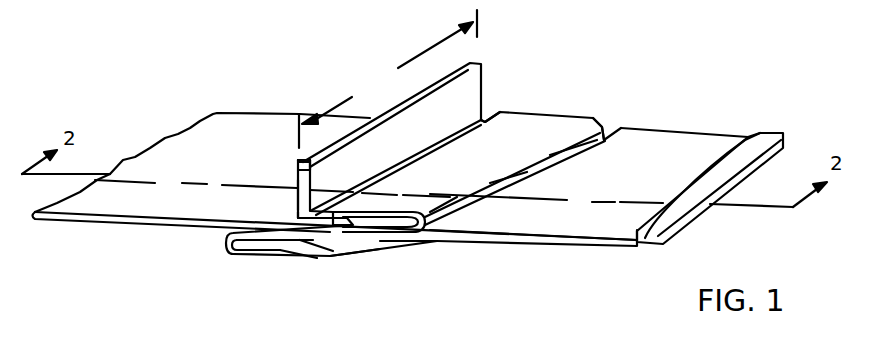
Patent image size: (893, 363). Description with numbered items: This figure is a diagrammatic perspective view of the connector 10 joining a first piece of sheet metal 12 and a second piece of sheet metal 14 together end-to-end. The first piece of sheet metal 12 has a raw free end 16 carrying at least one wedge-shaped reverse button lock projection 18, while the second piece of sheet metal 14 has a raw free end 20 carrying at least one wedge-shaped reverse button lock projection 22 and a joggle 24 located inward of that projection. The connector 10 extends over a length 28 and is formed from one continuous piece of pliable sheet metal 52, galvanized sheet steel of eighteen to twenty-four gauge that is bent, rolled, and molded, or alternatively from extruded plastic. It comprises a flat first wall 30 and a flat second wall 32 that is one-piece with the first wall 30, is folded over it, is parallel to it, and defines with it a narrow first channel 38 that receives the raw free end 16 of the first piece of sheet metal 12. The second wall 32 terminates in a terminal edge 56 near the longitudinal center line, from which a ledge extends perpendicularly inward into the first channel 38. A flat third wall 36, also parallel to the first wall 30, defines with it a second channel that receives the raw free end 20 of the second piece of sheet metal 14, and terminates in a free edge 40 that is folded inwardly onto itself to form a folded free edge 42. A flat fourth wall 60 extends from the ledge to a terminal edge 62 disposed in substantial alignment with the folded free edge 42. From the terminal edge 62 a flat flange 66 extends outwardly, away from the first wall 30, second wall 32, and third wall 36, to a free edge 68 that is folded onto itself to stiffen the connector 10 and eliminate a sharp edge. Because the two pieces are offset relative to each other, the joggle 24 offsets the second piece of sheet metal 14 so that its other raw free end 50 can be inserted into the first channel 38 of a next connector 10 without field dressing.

The connector 10 is at (368, 46).
The first piece of sheet metal 12 is at (168, 135).
The second piece of sheet metal 14 is at (720, 132).
The raw free end 16 is at (390, 247).
The wedge-shaped reverse button lock projection 18 is at (343, 250).
The raw free end 20 is at (243, 258).
The wedge-shaped reverse button lock projection 22 is at (268, 258).
The joggle 24 is at (443, 242).
The length 28 is at (392, 139).
The first wall 30 is at (350, 247).
The second wall 32 is at (543, 122).
The third wall 36 is at (250, 257).
The first channel 38 is at (396, 210).
The free edge 40 is at (312, 258).
The folded free edge 42 is at (323, 258).
The other raw free end 50 is at (690, 218).
The one continuous piece of pliable sheet metal 52 is at (580, 120).
The terminal edge 56 is at (492, 120).
The fourth wall 60 is at (311, 206).
The terminal edge 62 is at (297, 213).
The flange 66 is at (293, 200).
The free edge 68 is at (300, 168).